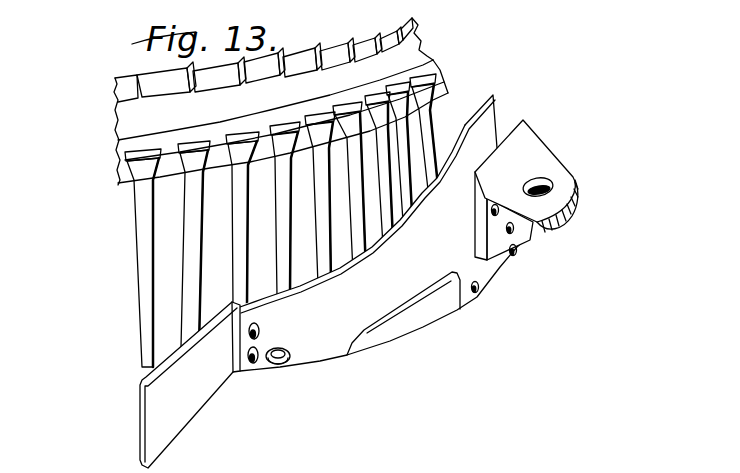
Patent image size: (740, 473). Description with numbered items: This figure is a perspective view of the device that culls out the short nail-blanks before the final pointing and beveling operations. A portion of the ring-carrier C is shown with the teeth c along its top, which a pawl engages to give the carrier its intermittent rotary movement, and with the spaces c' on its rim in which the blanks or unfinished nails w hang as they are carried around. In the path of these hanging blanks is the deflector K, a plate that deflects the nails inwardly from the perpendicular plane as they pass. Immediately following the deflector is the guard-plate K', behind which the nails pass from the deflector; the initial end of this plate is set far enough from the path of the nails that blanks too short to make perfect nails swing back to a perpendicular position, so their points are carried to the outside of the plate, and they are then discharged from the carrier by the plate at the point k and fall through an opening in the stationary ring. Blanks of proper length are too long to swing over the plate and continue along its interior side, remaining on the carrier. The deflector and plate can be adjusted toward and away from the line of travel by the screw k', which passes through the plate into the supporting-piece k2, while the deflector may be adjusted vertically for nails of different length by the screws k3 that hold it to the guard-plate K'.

The ring-carrier C is at (281, 101).
The teeth c is at (264, 60).
The spaces c' is at (280, 117).
The blanks or unfinished nails w is at (134, 263).
The deflector K is at (190, 385).
The guard-plate K' is at (385, 233).
The discharge point k is at (449, 171).
The screw k' is at (285, 345).
The supporting-piece k2 is at (403, 313).
The screws k3 is at (252, 365).